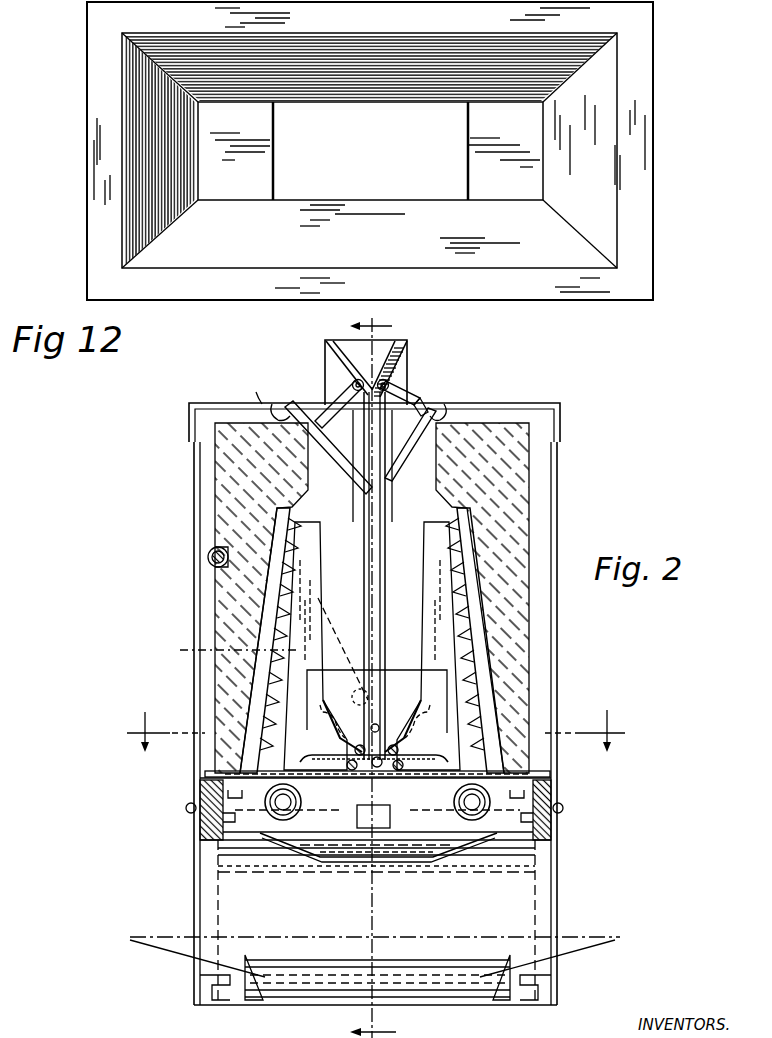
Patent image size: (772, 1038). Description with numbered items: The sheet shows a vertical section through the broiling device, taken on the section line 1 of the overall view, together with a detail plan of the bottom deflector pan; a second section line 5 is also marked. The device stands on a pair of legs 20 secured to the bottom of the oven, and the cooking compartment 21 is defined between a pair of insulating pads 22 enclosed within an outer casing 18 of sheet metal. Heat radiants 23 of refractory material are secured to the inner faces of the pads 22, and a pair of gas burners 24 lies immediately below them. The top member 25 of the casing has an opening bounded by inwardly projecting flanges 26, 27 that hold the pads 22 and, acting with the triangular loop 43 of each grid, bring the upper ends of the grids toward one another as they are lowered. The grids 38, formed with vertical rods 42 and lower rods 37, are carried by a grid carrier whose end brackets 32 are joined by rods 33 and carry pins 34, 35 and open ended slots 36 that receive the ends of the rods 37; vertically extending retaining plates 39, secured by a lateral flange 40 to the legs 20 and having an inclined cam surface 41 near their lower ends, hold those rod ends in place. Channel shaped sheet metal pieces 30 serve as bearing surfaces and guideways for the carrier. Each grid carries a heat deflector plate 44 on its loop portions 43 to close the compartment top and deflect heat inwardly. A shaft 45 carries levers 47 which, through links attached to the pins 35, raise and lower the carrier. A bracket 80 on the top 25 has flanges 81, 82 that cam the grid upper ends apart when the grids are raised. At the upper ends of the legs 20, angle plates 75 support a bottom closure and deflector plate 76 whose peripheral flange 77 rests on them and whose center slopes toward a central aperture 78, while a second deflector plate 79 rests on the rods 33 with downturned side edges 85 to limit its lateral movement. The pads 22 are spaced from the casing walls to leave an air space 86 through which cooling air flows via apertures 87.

In FIG. 2, the section line 1 is at (376, 678).
In FIG. 2, the section line 5 is at (373, 731).
In FIG. 2, the outer casing 18 is at (558, 646).
In FIG. 2, the legs 20 is at (195, 880).
In FIG. 2, the cooking compartment 21 is at (428, 631).
In FIG. 2, the insulating pads 22 is at (232, 466).
In FIG. 2, the heat radiants 23 is at (292, 528).
In FIG. 2, the gas burners 24 is at (288, 820).
In FIG. 2, the top member 25 is at (250, 404).
In FIG. 2, the flange 26 is at (420, 455).
In FIG. 2, the flange 27 is at (344, 465).
In FIG. 2, the channel shaped piece of sheet metal 30 is at (364, 570).
In FIG. 2, the end brackets 32 is at (393, 726).
In FIG. 2, the rods 33 is at (352, 770).
In FIG. 2, the pin 34 is at (362, 728).
In FIG. 2, the pin 35 is at (400, 770).
In FIG. 2, the slots 36 is at (408, 750).
In FIG. 2, the lower rods 37 is at (372, 730).
In FIG. 2, the grids 38 is at (372, 510).
In FIG. 2, the retaining plates 39 is at (305, 602).
In FIG. 2, the lateral flange 40 is at (538, 768).
In FIG. 2, the inclined cam surface 41 is at (410, 712).
In FIG. 2, the vertical rods 42 is at (364, 606).
In FIG. 2, the loop 43 is at (375, 436).
In FIG. 2, the heat deflector plate 44 is at (340, 395).
In FIG. 2, the shaft 45 is at (207, 558).
In FIG. 2, the levers 47 is at (233, 651).
In FIG. 2, the angle plates 75 is at (378, 806).
In FIG. 12, the bottom closure and deflector plate 76 is at (383, 229).
In FIG. 2, the bottom closure and deflector plate 76 is at (312, 856).
In FIG. 12, the peripheral flange 77 is at (369, 151).
In FIG. 2, the peripheral flange 77 is at (250, 848).
In FIG. 12, the central aperture 78 is at (375, 151).
In FIG. 2, the central aperture 78 is at (396, 858).
In FIG. 2, the second deflector plate 79 is at (280, 760).
In FIG. 2, the bracket 80 is at (348, 344).
In FIG. 2, the flange 81 is at (402, 355).
In FIG. 2, the flange 82 is at (336, 346).
In FIG. 2, the downturned side edge 85 is at (560, 786).
In FIG. 2, the air space 86 is at (520, 406).
In FIG. 2, the apertures 87 is at (268, 404).